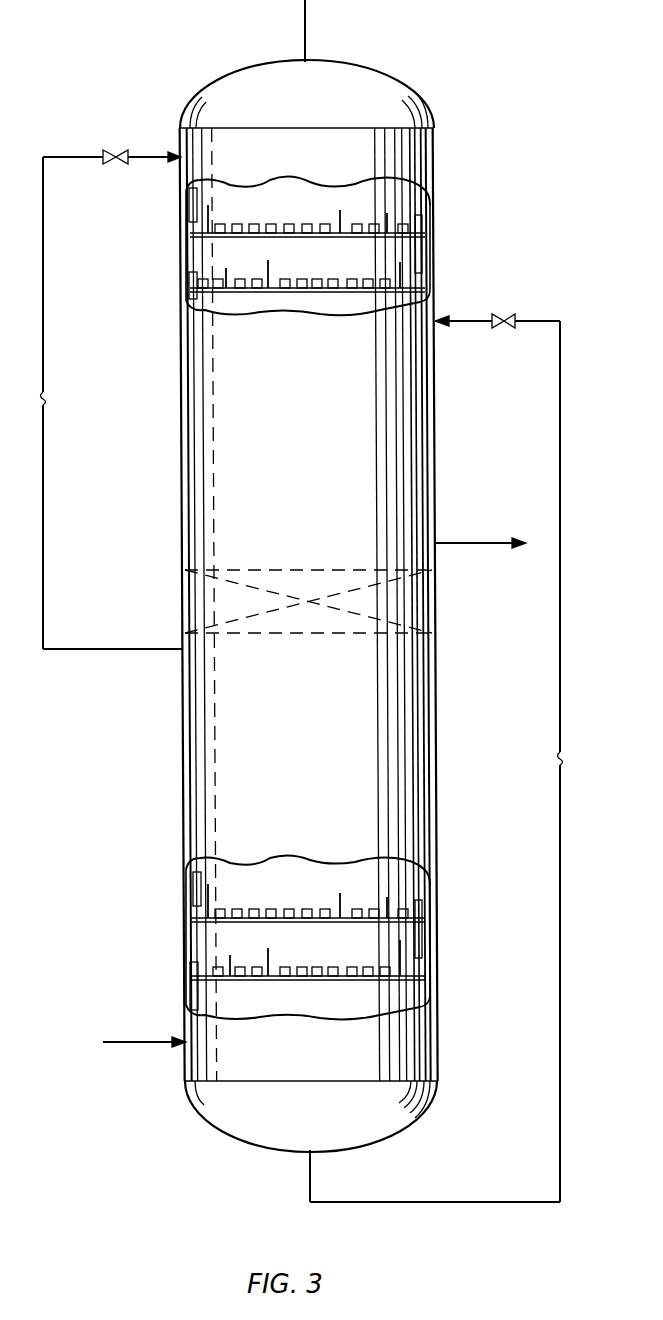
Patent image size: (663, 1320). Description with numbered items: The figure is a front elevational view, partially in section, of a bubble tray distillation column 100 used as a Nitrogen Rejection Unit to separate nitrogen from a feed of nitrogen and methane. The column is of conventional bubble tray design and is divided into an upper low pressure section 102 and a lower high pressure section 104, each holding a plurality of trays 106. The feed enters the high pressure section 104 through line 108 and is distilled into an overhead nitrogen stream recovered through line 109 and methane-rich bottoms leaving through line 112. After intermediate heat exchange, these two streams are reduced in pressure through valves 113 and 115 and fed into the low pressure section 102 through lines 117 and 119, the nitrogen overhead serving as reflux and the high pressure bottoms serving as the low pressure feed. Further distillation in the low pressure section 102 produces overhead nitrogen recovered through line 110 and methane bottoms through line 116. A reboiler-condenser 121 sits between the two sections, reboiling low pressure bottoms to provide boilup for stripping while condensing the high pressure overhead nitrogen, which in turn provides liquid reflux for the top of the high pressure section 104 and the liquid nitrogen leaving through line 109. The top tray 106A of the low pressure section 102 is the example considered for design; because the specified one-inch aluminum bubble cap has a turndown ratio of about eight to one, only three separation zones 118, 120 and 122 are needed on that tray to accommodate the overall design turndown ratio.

The bubble tray distillation column 100 is at (178, 697).
The low pressure section 102 is at (200, 369).
The high pressure section 104 is at (212, 790).
The trays 106 is at (420, 280).
The top tray 106A is at (294, 245).
The line 108 is at (150, 1038).
The line 109 is at (160, 648).
The line 110 is at (307, 15).
The line 112 is at (432, 1200).
The valve 113 is at (104, 156).
The valve 115 is at (504, 316).
The line 116 is at (492, 540).
The line 117 is at (168, 160).
The separation zone 118 is at (428, 205).
The line 119 is at (485, 323).
The separation zone 120 is at (345, 222).
The reboiler-condenser 121 is at (304, 568).
The separation zone 122 is at (262, 222).